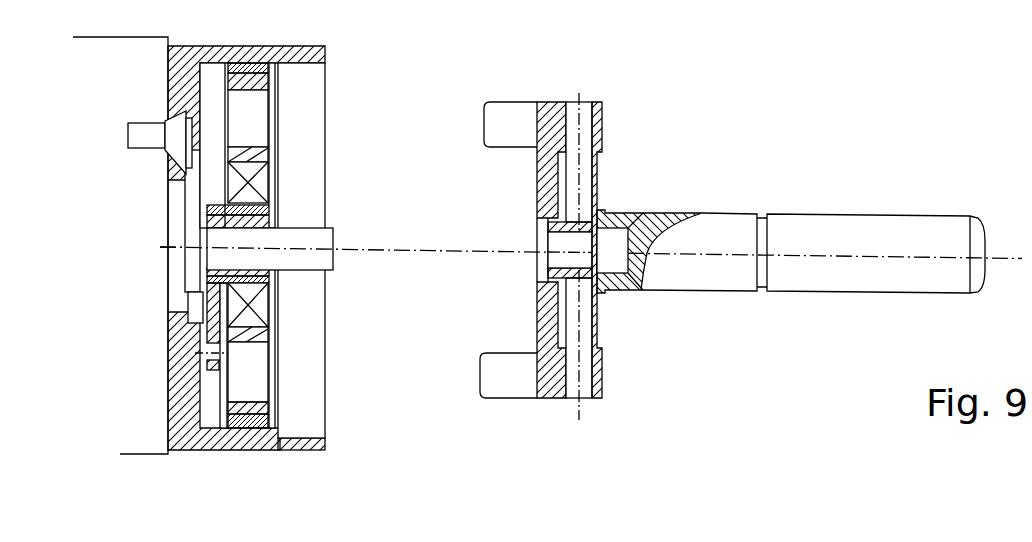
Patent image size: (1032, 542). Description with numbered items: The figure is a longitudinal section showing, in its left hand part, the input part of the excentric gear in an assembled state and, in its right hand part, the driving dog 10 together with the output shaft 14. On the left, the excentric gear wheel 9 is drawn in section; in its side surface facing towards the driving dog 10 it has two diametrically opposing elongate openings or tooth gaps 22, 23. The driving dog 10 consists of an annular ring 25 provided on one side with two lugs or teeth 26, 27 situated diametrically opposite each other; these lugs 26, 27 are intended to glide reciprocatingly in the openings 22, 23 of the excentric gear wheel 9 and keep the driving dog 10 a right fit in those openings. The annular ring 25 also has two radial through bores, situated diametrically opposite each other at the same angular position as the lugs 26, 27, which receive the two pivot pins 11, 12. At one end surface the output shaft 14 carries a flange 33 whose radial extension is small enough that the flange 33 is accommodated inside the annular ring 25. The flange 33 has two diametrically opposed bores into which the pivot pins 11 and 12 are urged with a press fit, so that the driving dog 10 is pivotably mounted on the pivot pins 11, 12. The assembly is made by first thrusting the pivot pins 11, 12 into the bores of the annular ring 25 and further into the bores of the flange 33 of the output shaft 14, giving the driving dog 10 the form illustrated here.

The excentric gear wheel 9 is at (246, 406).
The opening 22 is at (252, 122).
The opening 23 is at (247, 383).
The driving dog 10 is at (845, 353).
The annular ring 25 is at (559, 118).
The lug 26 is at (527, 128).
The lug 27 is at (527, 385).
The pivot pin 11 is at (582, 133).
The pivot pin 12 is at (578, 378).
The flange 33 is at (600, 187).
The output shaft 14 is at (848, 229).